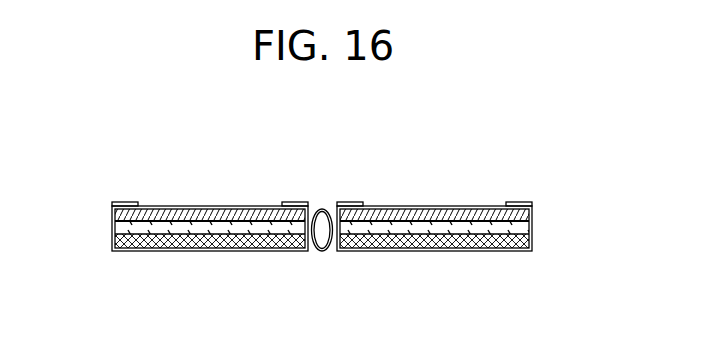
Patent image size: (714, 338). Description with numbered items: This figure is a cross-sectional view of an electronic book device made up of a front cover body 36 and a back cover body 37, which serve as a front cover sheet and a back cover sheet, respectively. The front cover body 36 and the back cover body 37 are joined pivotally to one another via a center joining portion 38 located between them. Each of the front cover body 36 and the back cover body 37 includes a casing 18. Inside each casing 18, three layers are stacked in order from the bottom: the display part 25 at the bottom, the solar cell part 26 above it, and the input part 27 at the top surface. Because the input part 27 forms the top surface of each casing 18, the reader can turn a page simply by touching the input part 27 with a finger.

The casing 18 is at (113, 227).
The display part 25 is at (203, 248).
The solar cell part 26 is at (253, 225).
The input part 27 is at (213, 210).
The front cover body 36 is at (149, 194).
The back cover body 37 is at (495, 194).
The center joining portion 38 is at (319, 209).